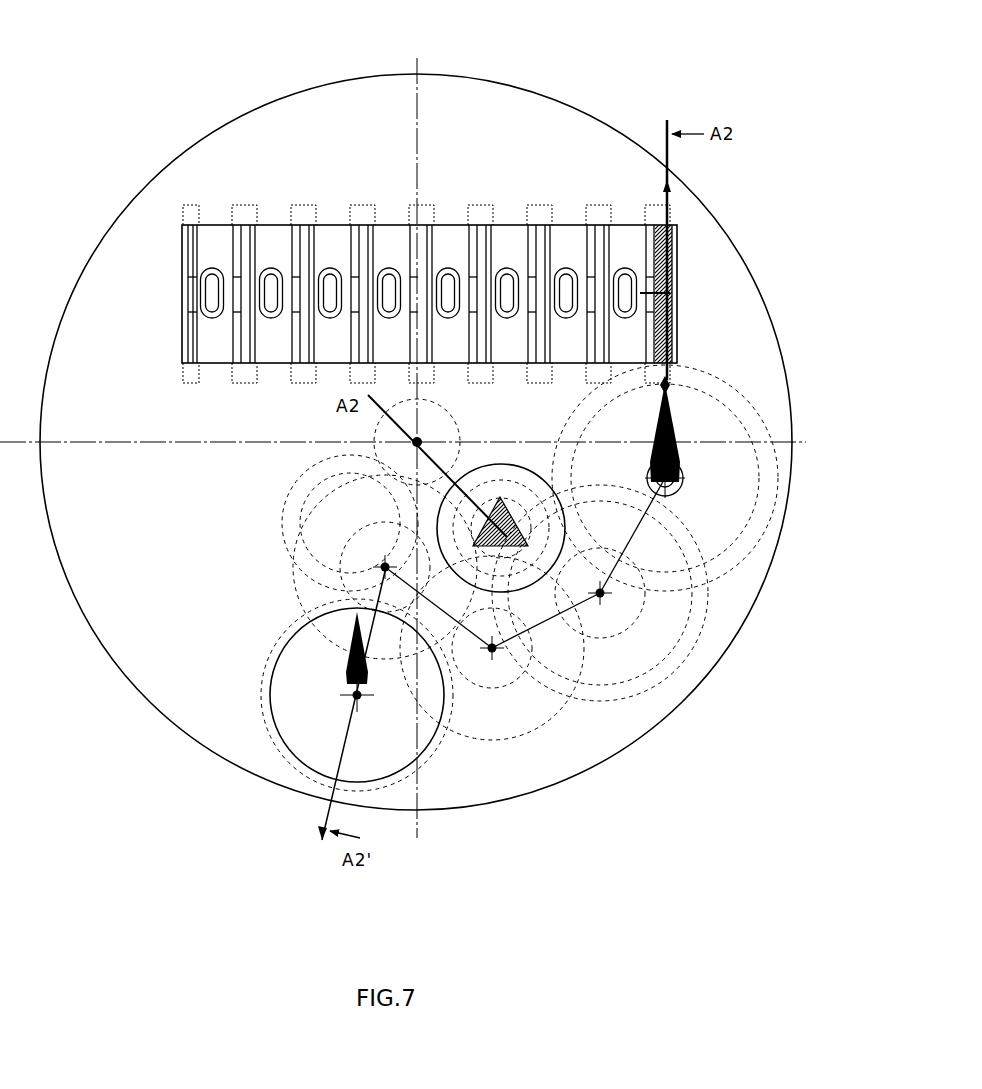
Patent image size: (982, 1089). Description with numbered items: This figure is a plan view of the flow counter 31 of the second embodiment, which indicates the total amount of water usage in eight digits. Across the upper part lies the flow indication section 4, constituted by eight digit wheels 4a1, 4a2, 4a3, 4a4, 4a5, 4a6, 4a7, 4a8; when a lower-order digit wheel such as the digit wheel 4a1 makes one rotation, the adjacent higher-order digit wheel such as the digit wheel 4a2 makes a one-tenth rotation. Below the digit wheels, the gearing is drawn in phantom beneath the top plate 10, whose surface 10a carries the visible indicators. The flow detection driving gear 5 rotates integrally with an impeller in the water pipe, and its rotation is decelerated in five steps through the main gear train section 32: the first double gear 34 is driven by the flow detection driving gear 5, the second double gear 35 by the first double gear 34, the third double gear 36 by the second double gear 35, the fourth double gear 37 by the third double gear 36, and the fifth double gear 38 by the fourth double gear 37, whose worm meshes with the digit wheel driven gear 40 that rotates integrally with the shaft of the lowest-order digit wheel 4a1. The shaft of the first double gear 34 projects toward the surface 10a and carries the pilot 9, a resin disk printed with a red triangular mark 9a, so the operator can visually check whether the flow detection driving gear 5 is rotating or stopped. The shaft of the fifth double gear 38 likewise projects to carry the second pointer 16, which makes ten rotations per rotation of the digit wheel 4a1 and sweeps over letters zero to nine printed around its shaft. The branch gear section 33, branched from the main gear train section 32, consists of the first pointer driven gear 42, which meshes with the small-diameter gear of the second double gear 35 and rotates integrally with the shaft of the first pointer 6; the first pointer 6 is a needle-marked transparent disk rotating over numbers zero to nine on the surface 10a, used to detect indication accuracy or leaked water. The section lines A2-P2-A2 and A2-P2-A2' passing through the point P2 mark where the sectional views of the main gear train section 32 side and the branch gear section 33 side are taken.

The flow counter 31 is at (531, 73).
The flow indication section 4 is at (371, 235).
The digit wheel 4a1 is at (626, 240).
The digit wheel 4a2 is at (567, 240).
The digit wheel 4a3 is at (509, 240).
The digit wheel 4a4 is at (447, 240).
The digit wheel 4a5 is at (391, 240).
The digit wheel 4a6 is at (332, 240).
The digit wheel 4a7 is at (272, 240).
The digit wheel 4a8 is at (213, 240).
The digit wheel driven gear 40 is at (690, 386).
The first double gear 34 is at (514, 462).
The pilot 9 is at (494, 466).
The triangular mark 9a is at (473, 526).
The second double gear 35 is at (316, 512).
The flow detection driving gear 5 is at (349, 515).
The section line point P2 is at (385, 567).
The second pointer 16 is at (738, 518).
The fifth double gear 38 is at (742, 601).
The surface 10a is at (700, 642).
The top plate 10 is at (652, 593).
The fourth double gear 37 is at (666, 651).
The main gear train section 32 is at (655, 708).
The third double gear 36 is at (550, 723).
The first pointer driven gear 42 is at (464, 817).
The branch gear section 33 is at (426, 770).
The first pointer 6 is at (322, 723).